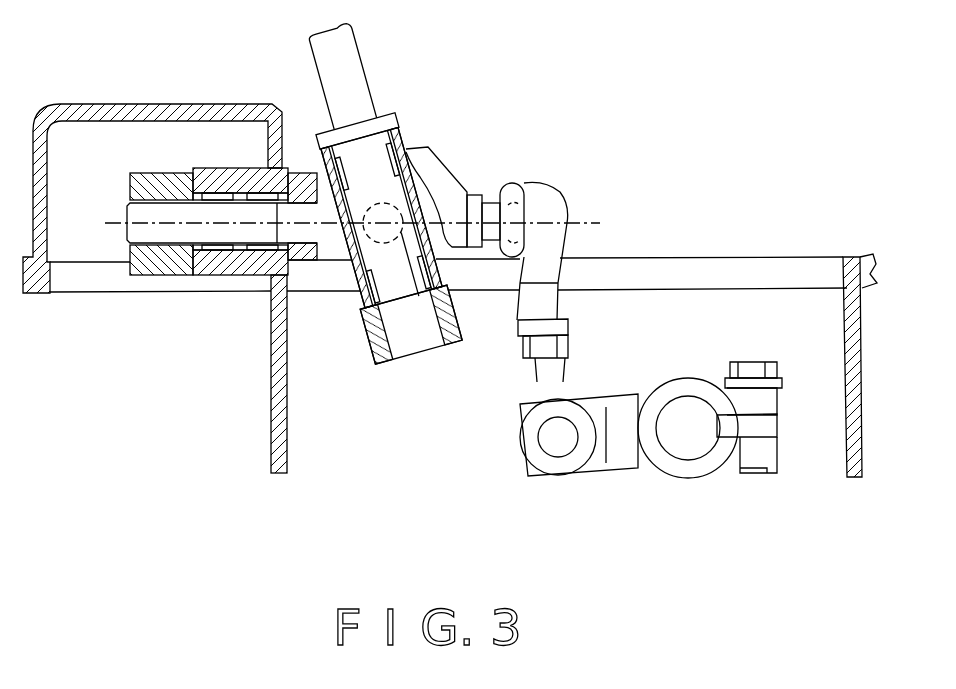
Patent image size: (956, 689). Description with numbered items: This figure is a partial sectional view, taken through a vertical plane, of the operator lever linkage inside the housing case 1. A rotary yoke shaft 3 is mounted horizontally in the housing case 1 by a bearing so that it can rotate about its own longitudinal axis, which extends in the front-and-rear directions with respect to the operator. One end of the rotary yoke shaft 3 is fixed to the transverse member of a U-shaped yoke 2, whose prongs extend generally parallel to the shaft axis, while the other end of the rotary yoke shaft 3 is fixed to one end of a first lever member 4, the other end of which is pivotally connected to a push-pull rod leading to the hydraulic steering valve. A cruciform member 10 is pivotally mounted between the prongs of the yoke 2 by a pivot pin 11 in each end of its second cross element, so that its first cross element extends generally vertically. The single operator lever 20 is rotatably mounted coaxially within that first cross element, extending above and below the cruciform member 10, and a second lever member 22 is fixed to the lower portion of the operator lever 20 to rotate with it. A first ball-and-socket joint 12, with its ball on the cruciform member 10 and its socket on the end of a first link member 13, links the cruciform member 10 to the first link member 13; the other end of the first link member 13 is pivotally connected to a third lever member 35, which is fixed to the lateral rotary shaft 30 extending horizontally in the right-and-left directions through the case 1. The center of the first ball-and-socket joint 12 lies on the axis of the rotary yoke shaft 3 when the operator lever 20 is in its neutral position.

The housing case 1 is at (108, 112).
The U-shaped yoke 2 is at (303, 180).
The rotary yoke shaft 3 is at (220, 213).
The first lever member 4 is at (167, 265).
The cruciform member 10 is at (433, 170).
The pivot pin 11 is at (397, 237).
The first ball-and-socket joint 12 is at (540, 207).
The first link member 13 is at (560, 307).
The operator lever 20 is at (352, 100).
The second lever member 22 is at (377, 338).
The lateral rotary shaft 30 is at (688, 417).
The third lever member 35 is at (613, 410).